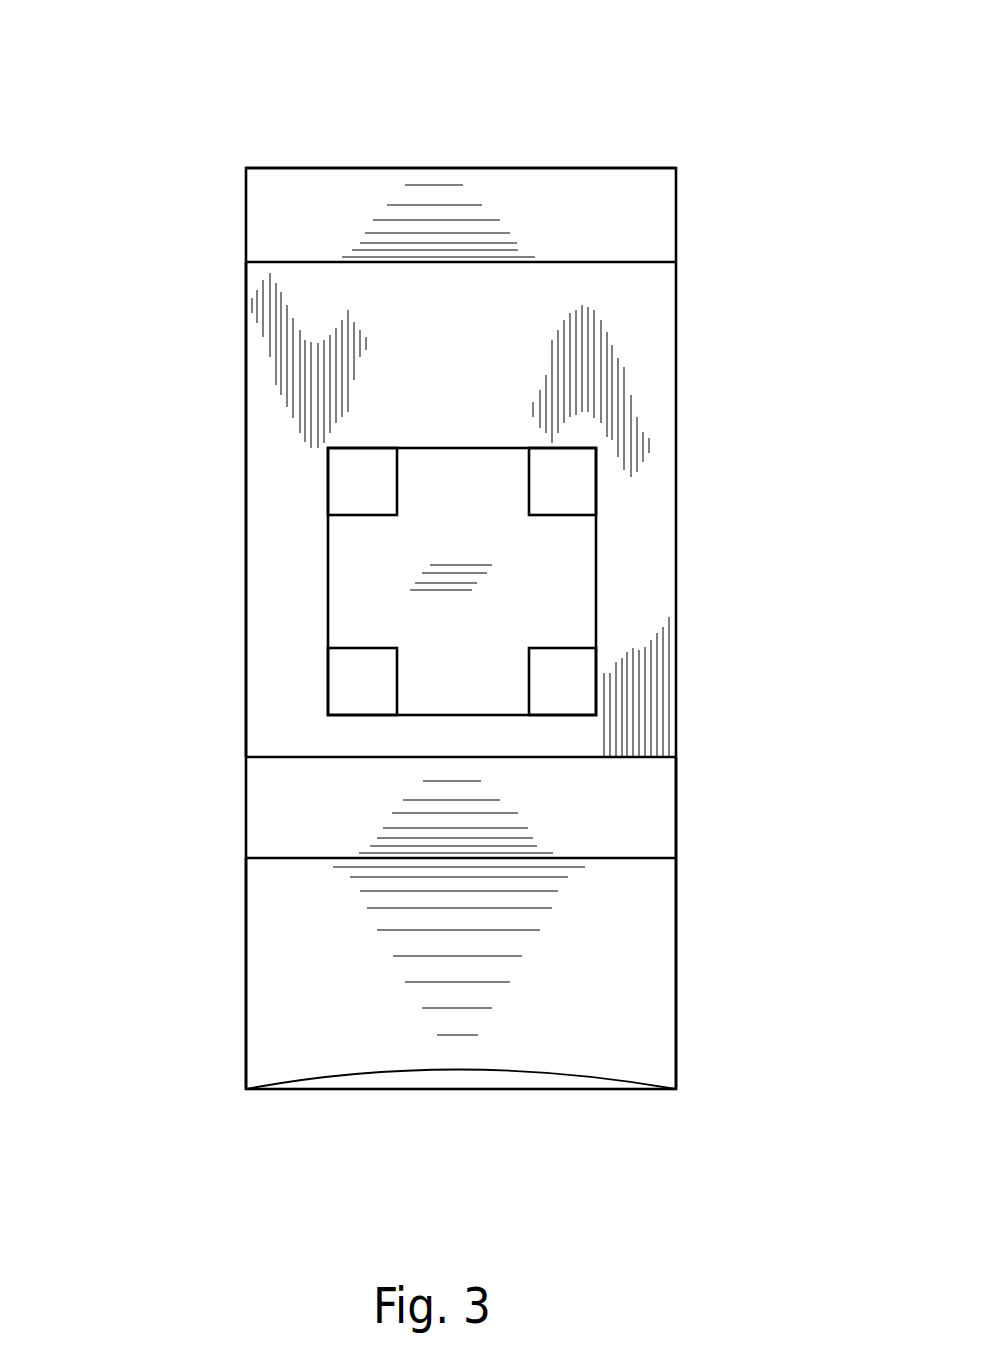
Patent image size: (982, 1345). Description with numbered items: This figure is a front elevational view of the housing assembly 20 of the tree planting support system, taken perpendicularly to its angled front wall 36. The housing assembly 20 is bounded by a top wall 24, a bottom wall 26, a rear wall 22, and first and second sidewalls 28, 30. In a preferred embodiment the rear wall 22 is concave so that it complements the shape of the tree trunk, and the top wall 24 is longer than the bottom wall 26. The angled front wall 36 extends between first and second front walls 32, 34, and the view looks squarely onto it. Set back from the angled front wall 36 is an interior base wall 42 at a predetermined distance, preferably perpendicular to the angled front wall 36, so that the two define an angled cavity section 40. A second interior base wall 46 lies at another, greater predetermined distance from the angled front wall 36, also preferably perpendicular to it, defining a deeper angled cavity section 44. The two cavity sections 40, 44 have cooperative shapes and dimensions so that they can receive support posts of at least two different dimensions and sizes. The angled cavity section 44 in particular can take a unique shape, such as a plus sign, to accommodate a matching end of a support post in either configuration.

The housing assembly 20 is at (688, 306).
The rear wall 22 is at (502, 1072).
The top wall 24 is at (546, 168).
The bottom wall 26 is at (307, 960).
The first sidewall 28 is at (243, 593).
The second sidewall 30 is at (678, 815).
The first front wall 32 is at (342, 200).
The second front wall 34 is at (283, 805).
The angled front wall 36 is at (633, 337).
The angled cavity section 40 is at (380, 491).
The interior base wall 42 is at (576, 498).
The angled cavity section 44 is at (505, 572).
The interior base wall 46 is at (474, 647).